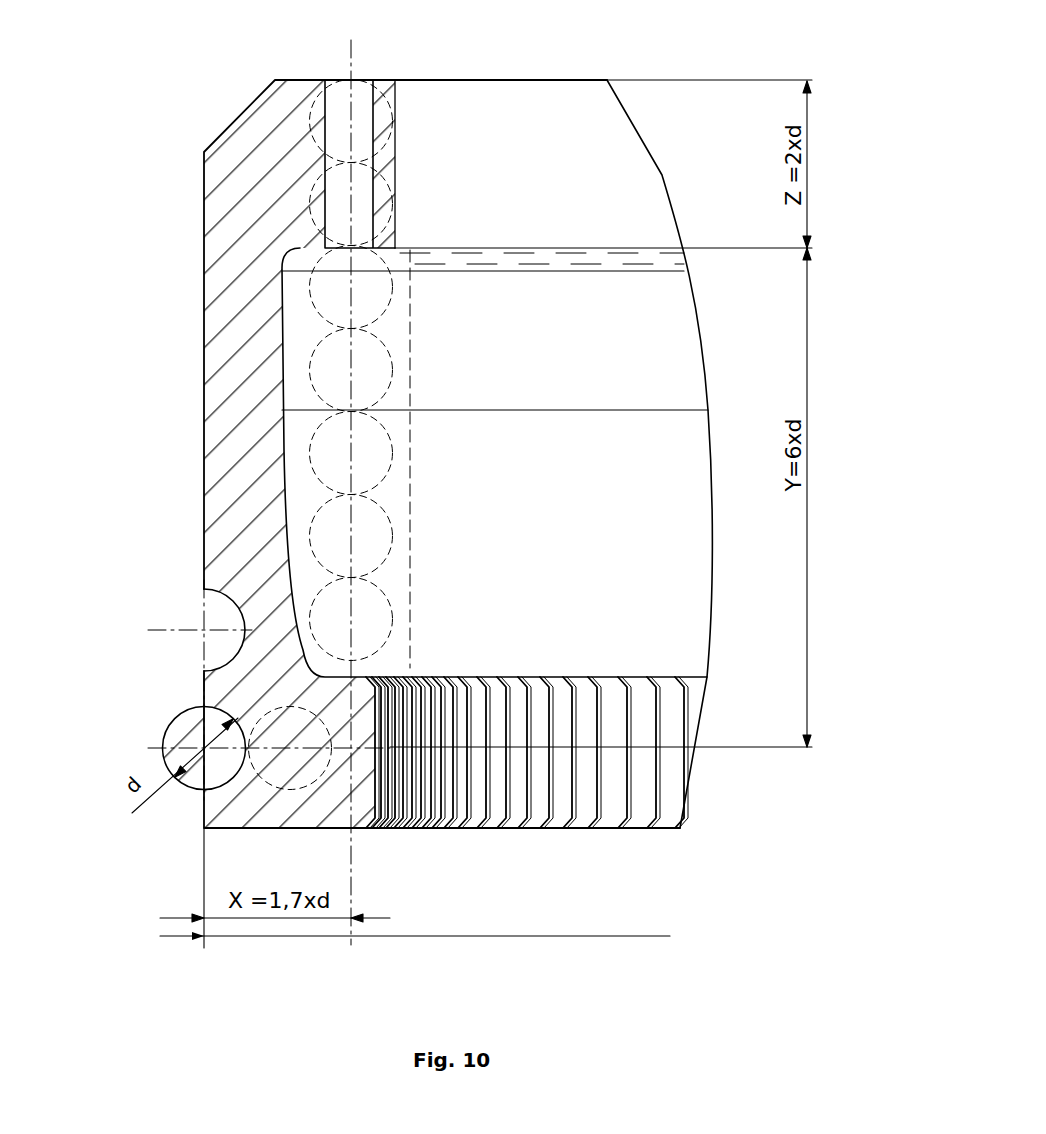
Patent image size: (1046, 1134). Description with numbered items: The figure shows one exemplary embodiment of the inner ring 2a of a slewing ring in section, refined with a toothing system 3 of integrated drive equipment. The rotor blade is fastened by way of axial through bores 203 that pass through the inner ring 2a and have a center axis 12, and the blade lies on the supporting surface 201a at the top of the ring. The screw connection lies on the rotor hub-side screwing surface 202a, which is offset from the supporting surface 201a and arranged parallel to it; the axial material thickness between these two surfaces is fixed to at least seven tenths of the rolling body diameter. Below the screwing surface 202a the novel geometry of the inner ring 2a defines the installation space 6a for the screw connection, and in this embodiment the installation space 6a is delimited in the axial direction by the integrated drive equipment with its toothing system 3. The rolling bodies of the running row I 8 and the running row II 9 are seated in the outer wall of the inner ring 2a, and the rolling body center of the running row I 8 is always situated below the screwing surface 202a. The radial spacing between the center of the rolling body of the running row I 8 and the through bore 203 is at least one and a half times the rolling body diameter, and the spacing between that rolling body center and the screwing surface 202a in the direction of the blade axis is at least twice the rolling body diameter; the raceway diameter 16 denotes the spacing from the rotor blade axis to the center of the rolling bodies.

The axial through bore 203 is at (338, 88).
The center axis 12 is at (331, 87).
The supporting surface 201a is at (378, 85).
The inner ring 2a is at (388, 153).
The screwing surface 202a is at (383, 248).
The installation space 6a is at (411, 505).
The running row II 9 is at (200, 630).
The running row I 8 is at (198, 744).
The toothing system 3 is at (545, 785).
The raceway diameter 16 is at (415, 923).